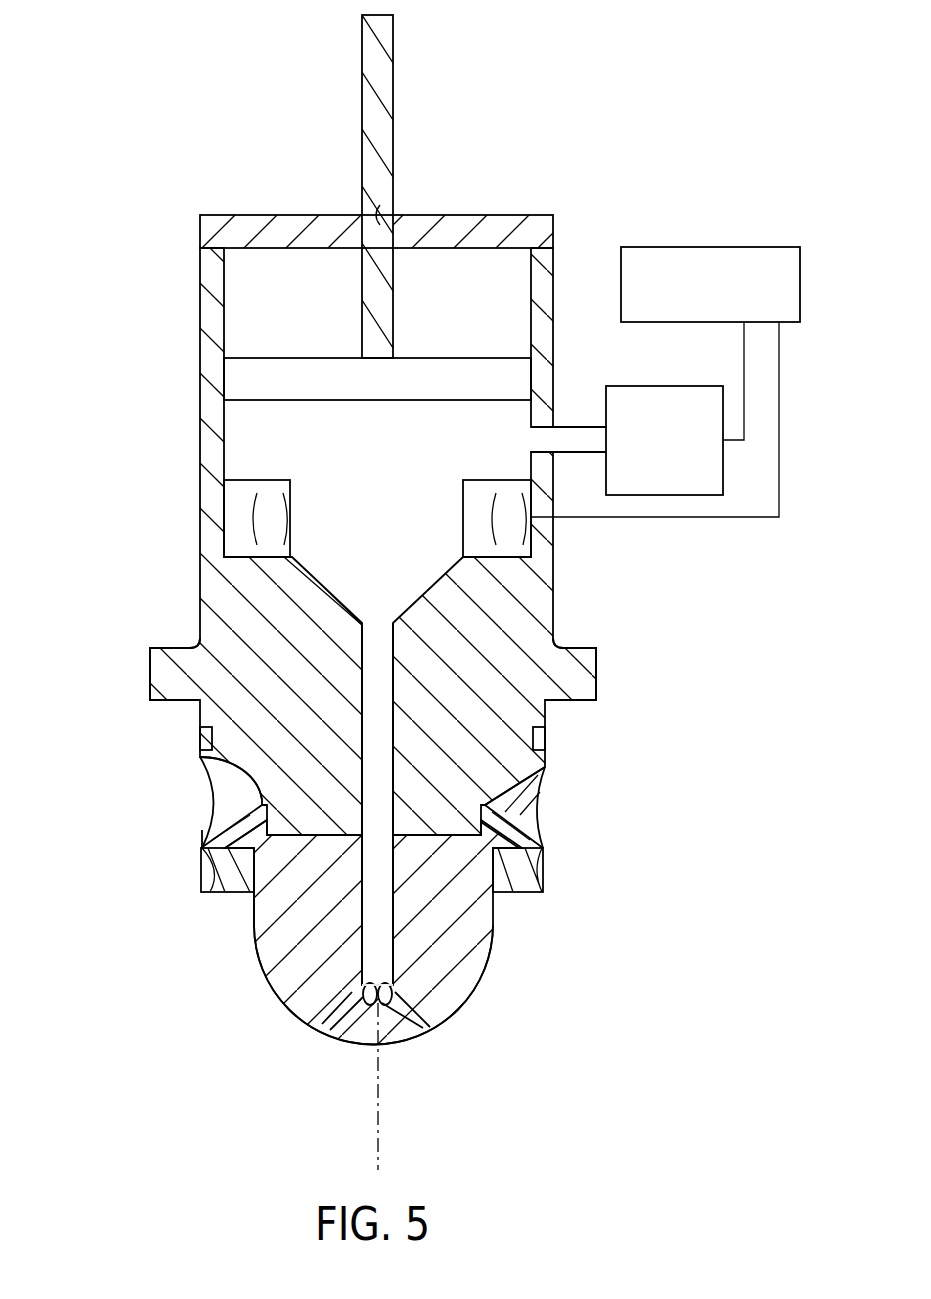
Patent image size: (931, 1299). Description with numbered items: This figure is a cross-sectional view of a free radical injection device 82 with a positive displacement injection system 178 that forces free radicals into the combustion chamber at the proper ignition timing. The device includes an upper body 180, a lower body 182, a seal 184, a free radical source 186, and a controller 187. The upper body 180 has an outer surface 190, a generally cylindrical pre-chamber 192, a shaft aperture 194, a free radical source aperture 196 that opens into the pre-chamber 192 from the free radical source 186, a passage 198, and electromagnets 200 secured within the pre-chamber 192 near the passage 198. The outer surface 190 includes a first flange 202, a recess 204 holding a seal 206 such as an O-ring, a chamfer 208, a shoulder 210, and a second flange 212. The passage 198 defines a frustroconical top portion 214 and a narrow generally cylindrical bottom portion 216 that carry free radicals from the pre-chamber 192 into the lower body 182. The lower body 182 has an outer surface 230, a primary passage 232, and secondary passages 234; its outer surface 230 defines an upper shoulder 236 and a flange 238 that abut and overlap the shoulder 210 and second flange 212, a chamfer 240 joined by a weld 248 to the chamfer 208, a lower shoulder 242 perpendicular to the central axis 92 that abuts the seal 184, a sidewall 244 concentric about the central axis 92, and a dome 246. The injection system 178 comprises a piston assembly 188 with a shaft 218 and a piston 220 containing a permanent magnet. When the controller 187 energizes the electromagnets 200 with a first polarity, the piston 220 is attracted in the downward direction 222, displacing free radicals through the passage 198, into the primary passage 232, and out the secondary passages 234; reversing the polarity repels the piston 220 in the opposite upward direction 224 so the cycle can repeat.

The free radical injection device 82 is at (135, 140).
The central axis 92 is at (380, 1130).
The positive displacement injection system 178 is at (588, 235).
The upper body 180 is at (573, 598).
The lower body 182 is at (510, 958).
The seal 184 is at (545, 884).
The free radical source 186 is at (700, 386).
The controller 187 is at (710, 247).
The piston assembly 188 is at (337, 148).
The outer surface 190 is at (200, 460).
The pre-chamber 192 is at (398, 442).
The shaft aperture 194 is at (372, 218).
The free radical source aperture 196 is at (545, 437).
The passage 198 is at (431, 582).
The electromagnets 200 is at (291, 516).
The first flange 202 is at (598, 662).
The recess 204 is at (543, 750).
The seal 206 is at (200, 735).
The chamfer 208 is at (538, 798).
The shoulder 210 is at (205, 763).
The second flange 212 is at (212, 802).
The frustroconical top portion 214 is at (327, 592).
The narrow generally cylindrical bottom portion 216 is at (365, 642).
The shaft 218 is at (383, 77).
The piston 220 is at (445, 358).
The downward direction 222 is at (153, 318).
The upward direction 224 is at (153, 258).
The outer surface 230 is at (473, 996).
The primary passage 232 is at (372, 942).
The secondary passages 234 is at (337, 1024).
The upper shoulder 236 is at (540, 825).
The flange 238 is at (543, 862).
The chamfer 240 is at (215, 830).
The lower shoulder 242 is at (203, 872).
The sidewall 244 is at (255, 935).
The dome 246 is at (355, 1045).
The weld 248 is at (543, 770).